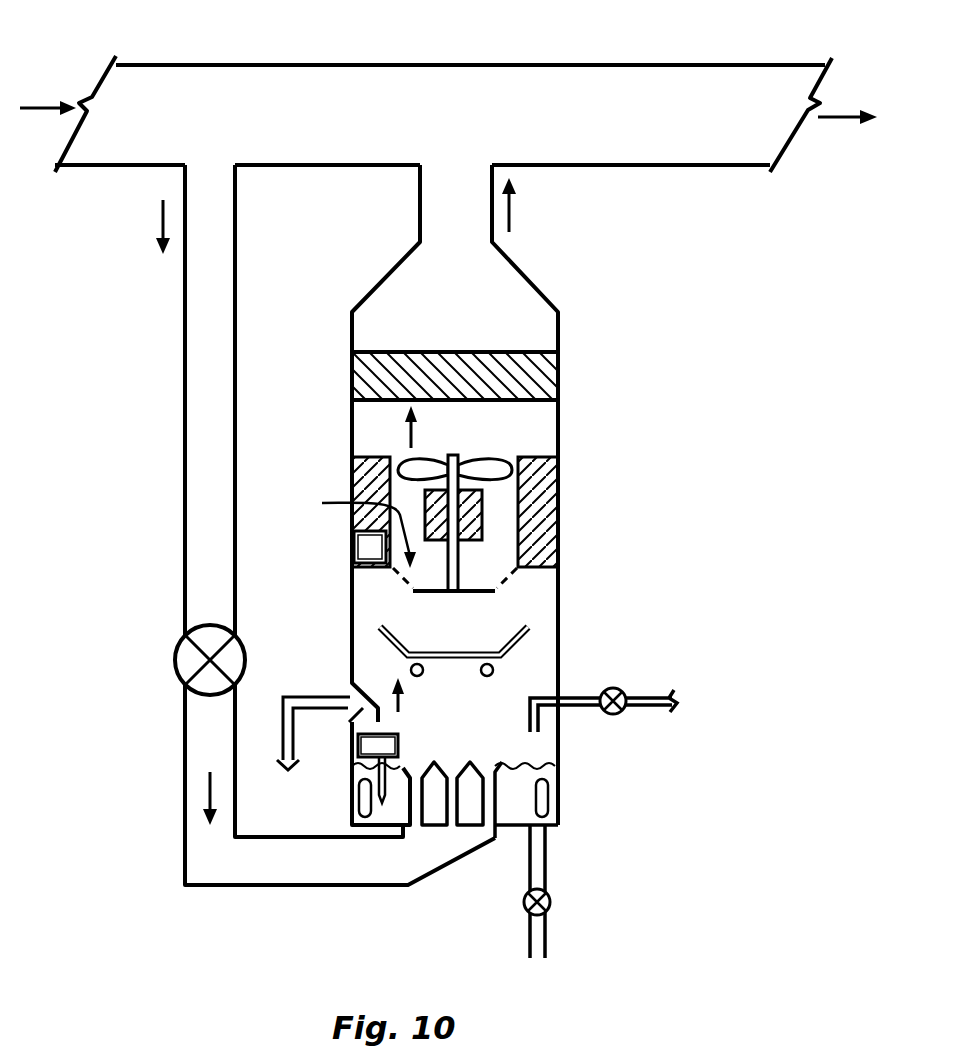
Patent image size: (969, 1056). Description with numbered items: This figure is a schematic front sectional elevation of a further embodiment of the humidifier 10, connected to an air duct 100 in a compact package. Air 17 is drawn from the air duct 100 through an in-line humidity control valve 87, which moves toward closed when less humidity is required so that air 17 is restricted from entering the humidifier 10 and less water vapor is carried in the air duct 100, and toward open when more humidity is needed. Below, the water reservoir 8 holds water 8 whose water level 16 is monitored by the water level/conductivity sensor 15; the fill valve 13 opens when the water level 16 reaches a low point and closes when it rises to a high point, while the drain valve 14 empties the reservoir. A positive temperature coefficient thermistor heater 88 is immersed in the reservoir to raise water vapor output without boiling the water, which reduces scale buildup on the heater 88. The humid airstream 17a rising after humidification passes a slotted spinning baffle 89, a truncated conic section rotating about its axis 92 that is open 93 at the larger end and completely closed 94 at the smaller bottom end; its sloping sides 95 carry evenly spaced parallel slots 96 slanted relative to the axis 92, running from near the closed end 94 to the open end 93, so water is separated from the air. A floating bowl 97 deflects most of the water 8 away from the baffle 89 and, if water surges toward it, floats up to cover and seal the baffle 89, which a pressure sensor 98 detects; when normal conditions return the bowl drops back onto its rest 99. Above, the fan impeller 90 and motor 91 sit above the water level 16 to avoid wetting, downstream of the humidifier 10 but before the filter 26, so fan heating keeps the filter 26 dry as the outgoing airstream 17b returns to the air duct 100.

The air duct 100 is at (500, 64).
The humidifier 10 is at (680, 411).
The filter 26 is at (532, 377).
The air 17 is at (205, 787).
The airstream after humidification 17a is at (400, 702).
The airstream 17b is at (414, 435).
The humidity control valve 87 is at (176, 660).
The fan impeller 90 is at (500, 458).
The motor 91 is at (483, 513).
The axis of the cone 92 is at (463, 565).
The open larger end 93 is at (354, 531).
The pressure sensor 98 is at (362, 552).
The sloping sides 95 is at (393, 572).
The slots 96 is at (412, 592).
The closed smaller end 94 is at (417, 593).
The slotted spinning baffle 89 is at (470, 592).
The floating bowl 97 is at (528, 640).
The rest 99 is at (495, 670).
The water level/conductivity sensor 15 is at (400, 745).
The water reservoir 8 is at (515, 803).
The water level 16 is at (530, 758).
The PTC thermistor heater 88 is at (360, 803).
The drain valve 14 is at (551, 902).
The fill valve 13 is at (614, 714).